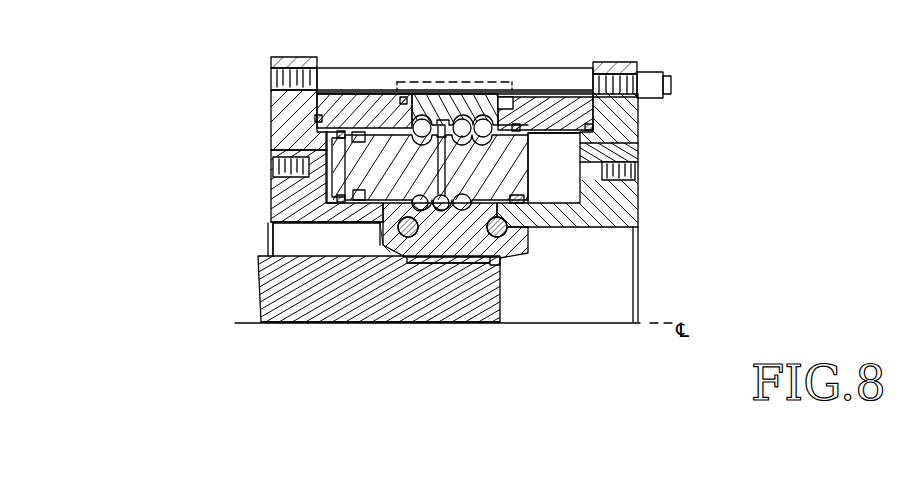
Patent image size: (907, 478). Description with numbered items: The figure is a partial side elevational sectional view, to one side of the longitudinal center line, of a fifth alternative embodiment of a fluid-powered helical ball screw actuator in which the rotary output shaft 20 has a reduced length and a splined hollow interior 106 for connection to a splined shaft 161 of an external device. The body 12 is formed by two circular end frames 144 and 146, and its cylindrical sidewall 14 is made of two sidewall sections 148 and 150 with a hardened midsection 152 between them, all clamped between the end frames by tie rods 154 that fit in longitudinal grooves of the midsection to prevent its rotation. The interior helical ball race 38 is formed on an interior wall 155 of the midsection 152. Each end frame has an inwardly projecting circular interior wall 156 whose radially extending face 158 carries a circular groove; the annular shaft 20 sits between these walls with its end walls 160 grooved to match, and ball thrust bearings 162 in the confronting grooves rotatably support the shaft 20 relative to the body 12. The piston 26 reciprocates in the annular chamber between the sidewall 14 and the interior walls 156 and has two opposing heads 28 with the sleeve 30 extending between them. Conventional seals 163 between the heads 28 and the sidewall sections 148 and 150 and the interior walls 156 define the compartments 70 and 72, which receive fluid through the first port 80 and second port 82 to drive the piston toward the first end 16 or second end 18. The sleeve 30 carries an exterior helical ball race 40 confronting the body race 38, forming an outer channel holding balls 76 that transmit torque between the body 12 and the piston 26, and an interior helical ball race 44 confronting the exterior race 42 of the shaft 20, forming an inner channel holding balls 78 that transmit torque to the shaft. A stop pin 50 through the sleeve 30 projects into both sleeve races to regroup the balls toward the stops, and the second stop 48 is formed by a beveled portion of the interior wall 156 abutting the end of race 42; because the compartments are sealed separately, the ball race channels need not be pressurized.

The body 12 is at (383, 90).
The cylindrical sidewall 14 is at (369, 104).
The first end 16 is at (272, 97).
The second end 18 is at (627, 125).
The rotary output shaft 20 is at (472, 300).
The piston 26 is at (520, 118).
The head 28 is at (338, 170).
The sleeve 30 is at (442, 124).
The interior helical ball race 38 is at (493, 117).
The exterior helical ball race 40 is at (393, 100).
The exterior helical ball race 42 is at (473, 197).
The interior helical ball race 44 is at (427, 230).
The second stop 48 is at (369, 237).
The stop pin 50 is at (518, 157).
The compartment 70 is at (327, 143).
The compartment 72 is at (590, 150).
The balls 76 is at (423, 120).
The balls 78 is at (495, 262).
The first port 80 is at (278, 168).
The second port 82 is at (626, 172).
The hollow interior 106 is at (510, 316).
The end frame 144 is at (277, 207).
The end frame 146 is at (600, 150).
The sidewall section 148 is at (349, 110).
The sidewall section 150 is at (522, 112).
The hardened midsection 152 is at (452, 105).
The tie rods 154 is at (585, 80).
The interior wall 155 is at (466, 130).
The interior wall 156 is at (638, 228).
The face 158 is at (500, 264).
The end wall 160 is at (498, 259).
The splined shaft 161 is at (412, 318).
The ball thrust bearings 162 is at (506, 228).
The seals 163 is at (514, 128).